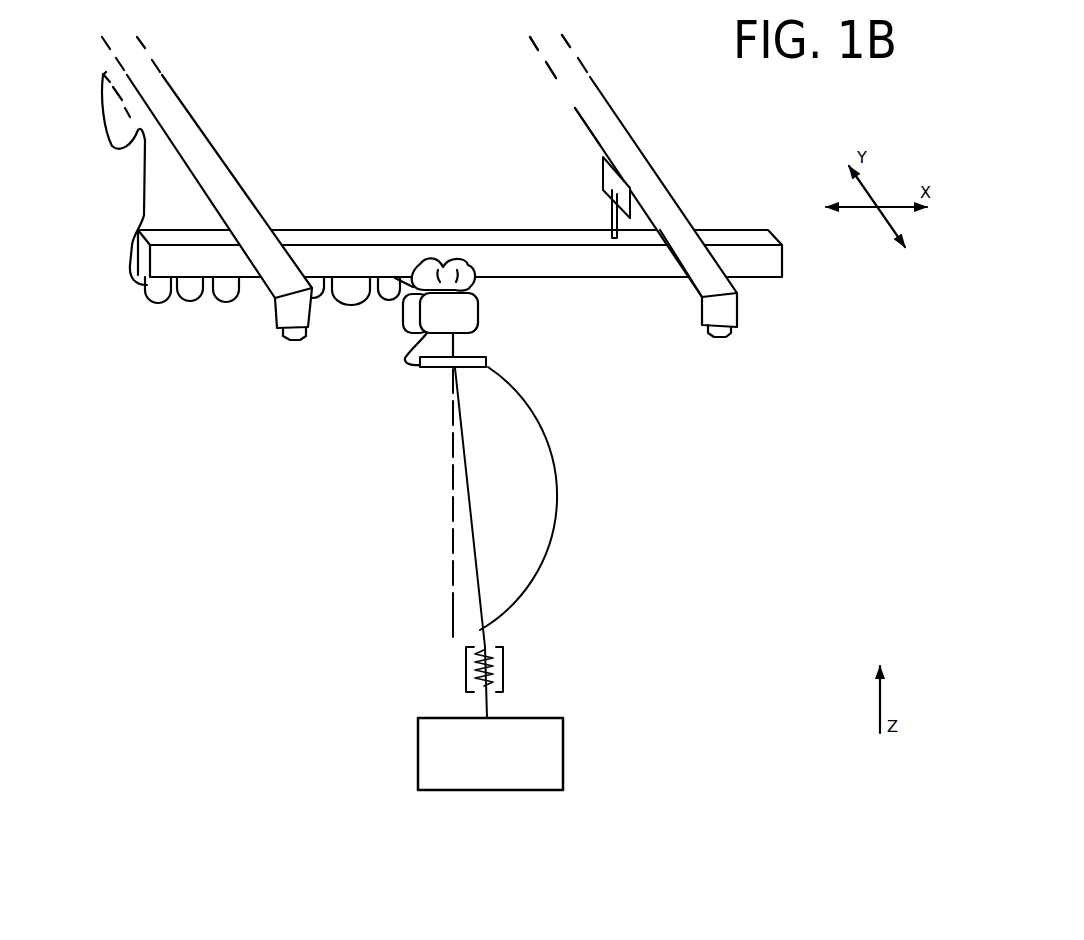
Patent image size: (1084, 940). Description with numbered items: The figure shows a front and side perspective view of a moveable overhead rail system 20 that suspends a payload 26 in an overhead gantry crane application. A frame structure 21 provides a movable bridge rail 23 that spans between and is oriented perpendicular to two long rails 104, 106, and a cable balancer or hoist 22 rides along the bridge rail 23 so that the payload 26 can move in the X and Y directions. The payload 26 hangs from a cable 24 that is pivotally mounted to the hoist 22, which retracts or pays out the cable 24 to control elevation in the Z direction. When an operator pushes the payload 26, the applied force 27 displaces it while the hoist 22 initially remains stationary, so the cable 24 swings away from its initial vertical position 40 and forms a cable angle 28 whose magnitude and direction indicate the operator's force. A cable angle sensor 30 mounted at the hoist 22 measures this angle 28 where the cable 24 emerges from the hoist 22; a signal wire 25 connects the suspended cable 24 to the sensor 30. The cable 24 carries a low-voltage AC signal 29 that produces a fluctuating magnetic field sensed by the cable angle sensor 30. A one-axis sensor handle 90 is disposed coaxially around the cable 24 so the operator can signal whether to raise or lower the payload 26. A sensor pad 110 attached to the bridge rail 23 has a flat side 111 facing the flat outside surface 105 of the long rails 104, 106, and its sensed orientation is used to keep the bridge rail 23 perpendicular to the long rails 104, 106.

The moveable rail system 20 is at (257, 211).
The frame structure 21 is at (573, 40).
The hoist 22 is at (440, 311).
The bridge rail 23 is at (298, 226).
The cable 24 is at (449, 447).
The signal wire 25 is at (561, 537).
The payload 26 is at (490, 754).
The applied force 27 is at (415, 760).
The cable angle 28 is at (466, 580).
The AC signal 29 is at (443, 420).
The cable angle sensor 30 is at (497, 364).
The initial vertical position 40 is at (450, 645).
The handle 90 is at (499, 669).
The long rail 104 is at (668, 184).
The flat outside surface 105 is at (549, 92).
The long rail 106 is at (203, 121).
The sensor pad 110 is at (597, 192).
The flat side 111 is at (631, 218).